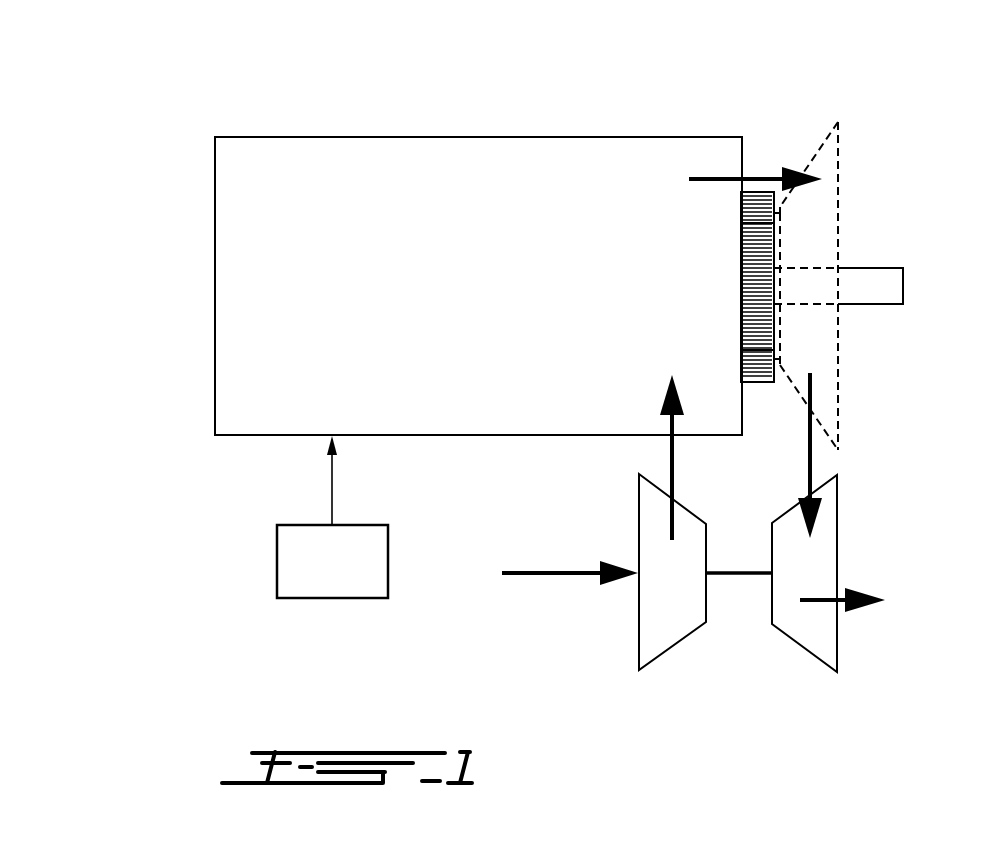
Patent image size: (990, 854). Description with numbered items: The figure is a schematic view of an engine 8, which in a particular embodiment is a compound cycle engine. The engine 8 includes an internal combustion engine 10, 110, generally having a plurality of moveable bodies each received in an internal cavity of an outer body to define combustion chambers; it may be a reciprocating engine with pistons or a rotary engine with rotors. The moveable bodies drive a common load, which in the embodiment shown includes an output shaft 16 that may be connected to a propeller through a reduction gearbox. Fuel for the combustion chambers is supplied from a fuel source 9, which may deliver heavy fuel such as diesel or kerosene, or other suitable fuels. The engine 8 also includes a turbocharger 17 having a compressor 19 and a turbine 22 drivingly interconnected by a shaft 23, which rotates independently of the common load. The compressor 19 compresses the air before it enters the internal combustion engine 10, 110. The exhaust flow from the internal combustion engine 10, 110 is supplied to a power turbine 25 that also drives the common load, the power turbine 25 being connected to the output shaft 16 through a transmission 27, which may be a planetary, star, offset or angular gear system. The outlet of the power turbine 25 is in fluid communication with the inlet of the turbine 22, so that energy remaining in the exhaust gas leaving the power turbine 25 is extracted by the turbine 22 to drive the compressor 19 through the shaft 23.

The engine 8 is at (138, 193).
The internal combustion engine 10 is at (370, 178).
The internal combustion engine 110 is at (478, 286).
The fuel source 9 is at (330, 582).
The transmission 27 is at (757, 255).
The power turbine 25 is at (825, 262).
The output shaft 16 is at (880, 285).
The turbocharger 17 is at (742, 650).
The compressor 19 is at (638, 613).
The turbine 22 is at (812, 578).
The shaft 23 is at (737, 583).